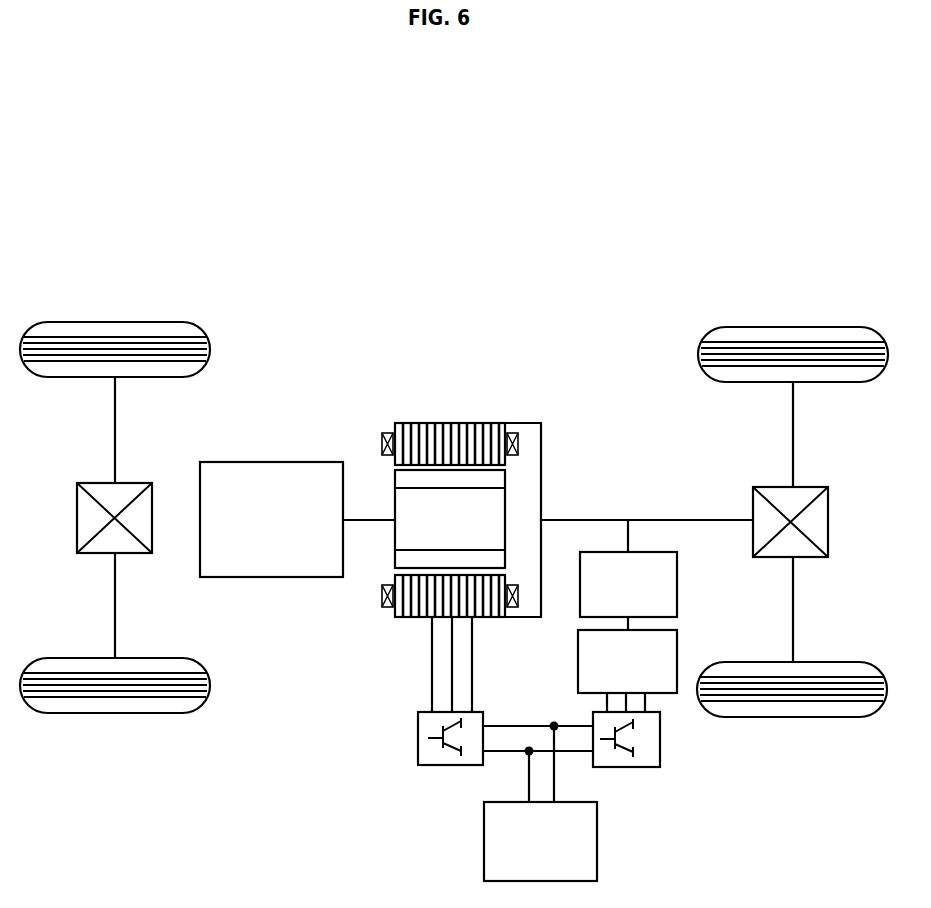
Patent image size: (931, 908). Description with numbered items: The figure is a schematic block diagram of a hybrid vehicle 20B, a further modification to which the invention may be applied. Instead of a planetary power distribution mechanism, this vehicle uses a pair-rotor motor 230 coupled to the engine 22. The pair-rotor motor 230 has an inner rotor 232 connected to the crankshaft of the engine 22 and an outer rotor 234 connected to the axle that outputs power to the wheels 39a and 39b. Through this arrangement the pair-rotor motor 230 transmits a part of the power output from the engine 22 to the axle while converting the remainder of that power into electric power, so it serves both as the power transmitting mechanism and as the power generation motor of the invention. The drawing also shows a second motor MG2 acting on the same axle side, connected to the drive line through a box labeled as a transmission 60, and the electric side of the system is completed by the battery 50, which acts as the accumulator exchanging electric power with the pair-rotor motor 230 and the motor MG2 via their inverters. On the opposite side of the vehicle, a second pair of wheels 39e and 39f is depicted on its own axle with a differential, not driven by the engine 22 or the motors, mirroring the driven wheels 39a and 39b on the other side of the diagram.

The hybrid vehicle 20B is at (578, 232).
The engine 22 is at (272, 577).
The pair-rotor motor 230 is at (488, 283).
The inner rotor 232 is at (395, 505).
The outer rotor 234 is at (470, 423).
The wheel 39a is at (795, 327).
The wheel 39b is at (793, 717).
The wheel 39e is at (117, 322).
The wheel 39f is at (115, 713).
The battery 50 is at (598, 843).
The transmission 60 is at (677, 585).
The motor MG2 is at (578, 665).